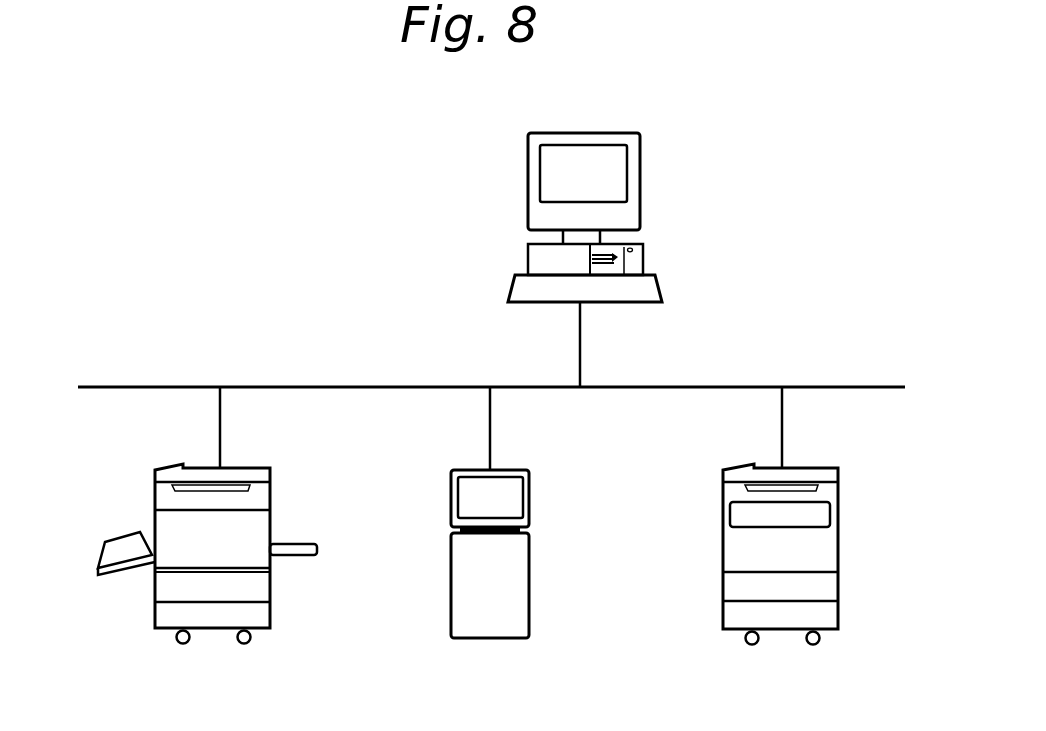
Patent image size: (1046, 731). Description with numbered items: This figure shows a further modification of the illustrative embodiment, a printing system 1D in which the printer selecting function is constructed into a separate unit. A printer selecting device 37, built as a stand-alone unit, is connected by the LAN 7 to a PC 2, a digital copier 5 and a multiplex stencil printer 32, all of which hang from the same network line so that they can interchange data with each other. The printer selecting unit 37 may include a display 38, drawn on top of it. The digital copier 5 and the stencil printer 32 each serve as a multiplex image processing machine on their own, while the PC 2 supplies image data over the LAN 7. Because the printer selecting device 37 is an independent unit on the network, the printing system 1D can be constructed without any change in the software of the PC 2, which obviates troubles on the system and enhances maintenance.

The printing system 1D is at (800, 200).
The personal computer 2 is at (640, 160).
The digital copier 5 is at (782, 632).
The LAN 7 is at (297, 387).
The stencil printer 32 is at (213, 632).
The printer selecting device 37 is at (510, 585).
The display 38 is at (512, 492).